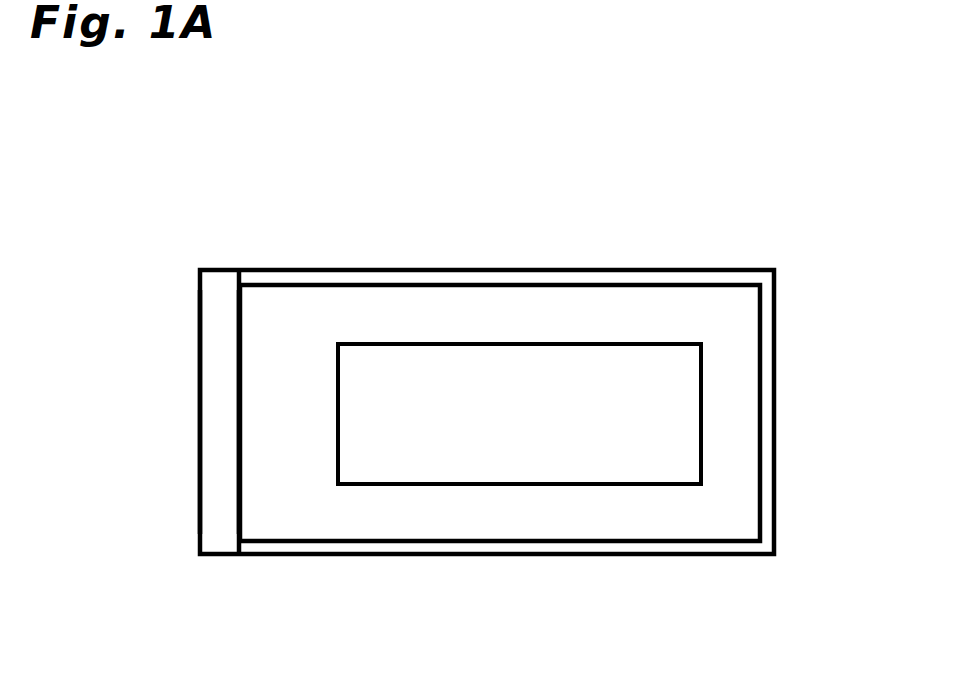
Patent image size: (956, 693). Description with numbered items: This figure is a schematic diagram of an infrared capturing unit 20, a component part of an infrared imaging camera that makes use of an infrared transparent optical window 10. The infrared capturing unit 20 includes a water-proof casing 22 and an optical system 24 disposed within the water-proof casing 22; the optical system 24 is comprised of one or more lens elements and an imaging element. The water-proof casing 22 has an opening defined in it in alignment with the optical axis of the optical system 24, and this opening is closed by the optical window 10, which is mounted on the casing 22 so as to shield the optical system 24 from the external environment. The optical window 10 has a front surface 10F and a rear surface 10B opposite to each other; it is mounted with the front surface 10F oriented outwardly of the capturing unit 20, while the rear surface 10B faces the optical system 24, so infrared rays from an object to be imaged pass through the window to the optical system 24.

The infrared capturing unit 20 is at (727, 259).
The optical window 10 is at (220, 417).
The front surface 10F is at (198, 349).
The rear surface 10B is at (241, 330).
The water-proof casing 22 is at (765, 443).
The optical system 24 is at (469, 457).